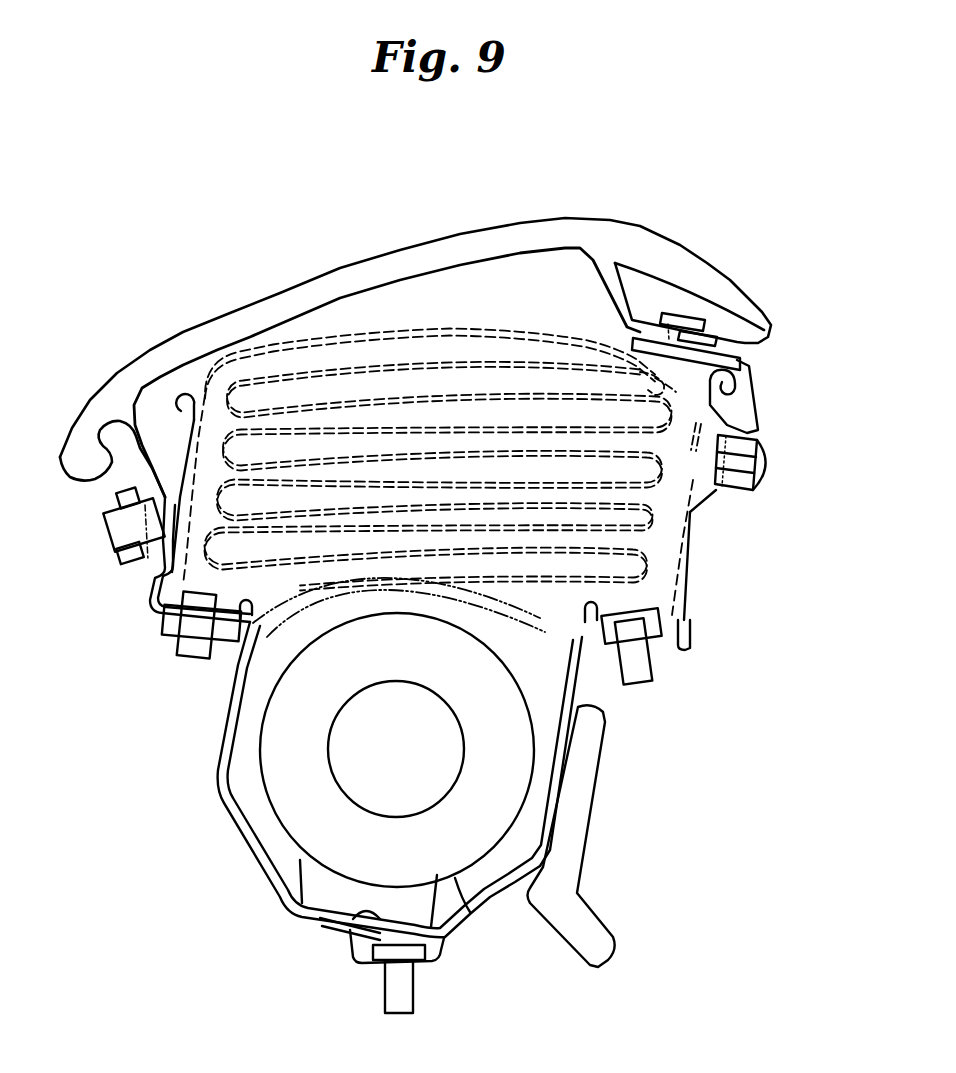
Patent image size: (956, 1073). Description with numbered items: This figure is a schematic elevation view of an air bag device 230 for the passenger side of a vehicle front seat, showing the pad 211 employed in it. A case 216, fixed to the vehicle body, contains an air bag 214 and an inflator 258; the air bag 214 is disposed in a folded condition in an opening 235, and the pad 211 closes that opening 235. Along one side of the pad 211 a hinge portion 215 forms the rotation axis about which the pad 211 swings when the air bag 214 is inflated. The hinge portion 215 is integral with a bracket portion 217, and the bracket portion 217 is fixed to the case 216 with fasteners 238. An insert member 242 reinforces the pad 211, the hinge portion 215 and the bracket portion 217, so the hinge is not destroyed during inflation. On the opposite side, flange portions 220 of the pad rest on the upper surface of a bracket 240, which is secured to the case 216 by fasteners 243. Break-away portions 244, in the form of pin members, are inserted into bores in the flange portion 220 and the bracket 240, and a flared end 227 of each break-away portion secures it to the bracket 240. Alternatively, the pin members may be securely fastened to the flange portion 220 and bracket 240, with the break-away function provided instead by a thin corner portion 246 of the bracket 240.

The pad 211 is at (542, 220).
The air bag device 230 is at (773, 228).
The opening 235 is at (437, 298).
The insert member 242 is at (230, 343).
The flared end 227 is at (640, 358).
The flange portion 220 is at (624, 296).
The break-away portion 244 is at (708, 327).
The thin corner portion 246 is at (743, 367).
The bracket 240 is at (751, 398).
The fasteners 243 is at (770, 463).
The air bag 214 is at (683, 537).
The hinge portion 215 is at (128, 452).
The fasteners 238 is at (106, 522).
The bracket portion 217 is at (140, 572).
The case 216 is at (238, 842).
The inflator 258 is at (510, 783).